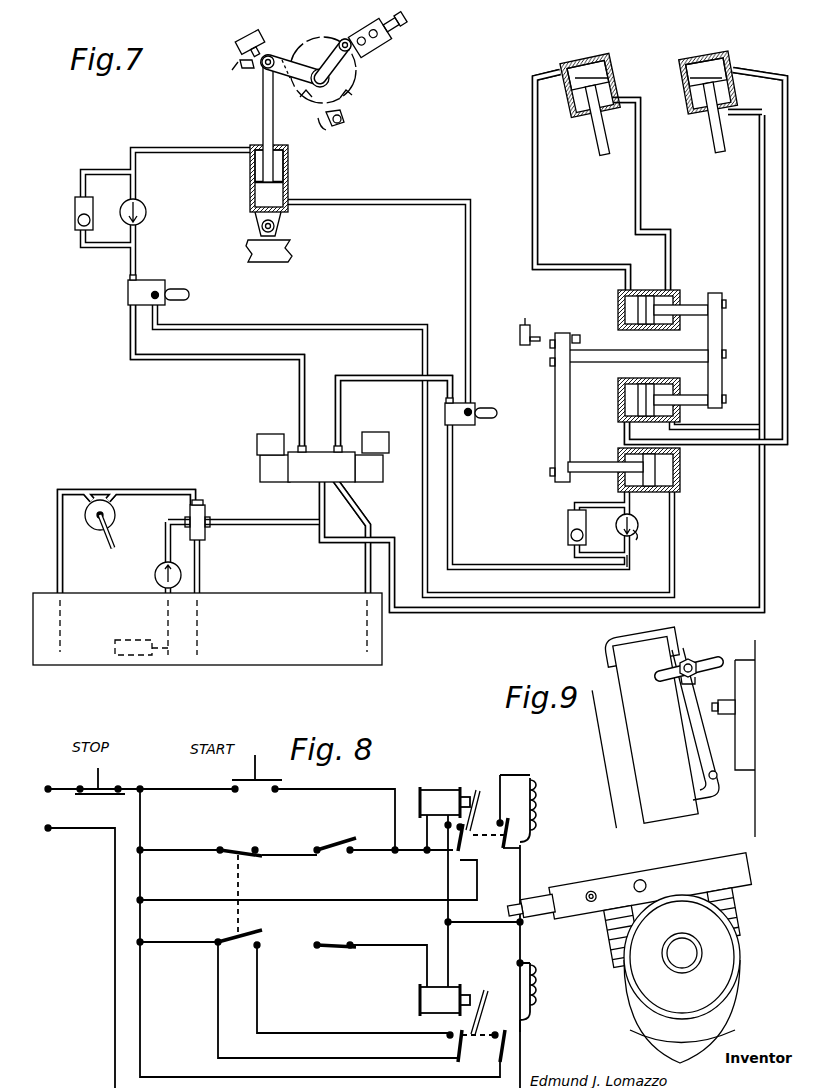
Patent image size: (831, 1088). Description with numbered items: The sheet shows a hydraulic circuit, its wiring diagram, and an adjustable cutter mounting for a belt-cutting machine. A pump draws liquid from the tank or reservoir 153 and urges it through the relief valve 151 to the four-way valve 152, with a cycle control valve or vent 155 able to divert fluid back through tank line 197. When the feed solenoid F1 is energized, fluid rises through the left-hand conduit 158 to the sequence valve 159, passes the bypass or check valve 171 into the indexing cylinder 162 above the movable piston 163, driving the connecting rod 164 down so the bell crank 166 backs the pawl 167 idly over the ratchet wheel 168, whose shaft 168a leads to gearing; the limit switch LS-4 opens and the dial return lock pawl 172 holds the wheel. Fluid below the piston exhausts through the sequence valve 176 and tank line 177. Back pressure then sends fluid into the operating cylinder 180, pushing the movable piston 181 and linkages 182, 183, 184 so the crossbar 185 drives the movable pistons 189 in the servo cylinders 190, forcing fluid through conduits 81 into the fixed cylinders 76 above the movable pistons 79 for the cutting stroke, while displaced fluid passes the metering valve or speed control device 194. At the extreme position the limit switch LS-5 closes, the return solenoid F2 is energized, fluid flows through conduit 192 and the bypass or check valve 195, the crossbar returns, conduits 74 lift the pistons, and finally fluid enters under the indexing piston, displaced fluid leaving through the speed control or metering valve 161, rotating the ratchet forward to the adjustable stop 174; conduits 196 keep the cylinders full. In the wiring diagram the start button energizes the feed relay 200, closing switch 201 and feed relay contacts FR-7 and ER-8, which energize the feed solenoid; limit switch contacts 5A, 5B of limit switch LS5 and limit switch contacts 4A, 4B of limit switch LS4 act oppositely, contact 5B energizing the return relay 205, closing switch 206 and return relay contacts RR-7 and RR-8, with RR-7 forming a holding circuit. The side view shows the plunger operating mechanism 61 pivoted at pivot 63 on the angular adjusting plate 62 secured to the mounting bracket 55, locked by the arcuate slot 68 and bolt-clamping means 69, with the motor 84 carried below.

In FIG. 7, the limit switch LS-4 is at (238, 38).
In FIG. 7, the bell crank 166 is at (303, 58).
In FIG. 7, the shaft 168a is at (322, 70).
In FIG. 7, the adjustable stop 174 is at (386, 28).
In FIG. 7, the pawl 167 is at (352, 60).
In FIG. 7, the ratchet wheel 168 is at (340, 108).
In FIG. 7, the dial return lock pawl 172 is at (333, 128).
In FIG. 7, the connecting rod 164 is at (262, 110).
In FIG. 7, the movable piston 163 is at (252, 170).
In FIG. 7, the indexing cylinder 162 is at (243, 204).
In FIG. 7, the speed control or metering valve 161 is at (146, 210).
In FIG. 7, the bypass or check valve 171 is at (75, 212).
In FIG. 7, the sequence valve 159 is at (158, 282).
In FIG. 7, the left-hand conduit 158 is at (300, 390).
In FIG. 7, the conduit 192 is at (360, 373).
In FIG. 7, the return solenoid F2 is at (257, 447).
In FIG. 8, the return solenoid F2 is at (546, 1000).
In FIG. 7, the feed solenoid F1 is at (388, 433).
In FIG. 8, the feed solenoid F1 is at (548, 822).
In FIG. 7, the sequence valve 176 is at (452, 420).
In FIG. 7, the cycle control valve or vent 155 is at (100, 500).
In FIG. 7, the 4-way valve 152 is at (298, 480).
In FIG. 7, the relief valve 151 is at (203, 538).
In FIG. 7, the tank line 197 is at (60, 550).
In FIG. 7, the tank line 177 is at (365, 572).
In FIG. 7, the tank or reservoir 153 is at (300, 655).
In FIG. 7, the fixed cylinders 76 is at (612, 65).
In FIG. 7, the conduits 81 is at (545, 76).
In FIG. 7, the movable pistons 79 is at (700, 80).
In FIG. 7, the conduits 74 is at (640, 160).
In FIG. 7, the conduits 196 is at (702, 232).
In FIG. 7, the movable pistons 189 is at (644, 284).
In FIG. 7, the crossbar 185 is at (712, 293).
In FIG. 7, the servo cylinders 190 is at (618, 298).
In FIG. 7, the linkage 184 is at (620, 362).
In FIG. 7, the linkage 183 is at (558, 430).
In FIG. 7, the linkage 182 is at (590, 468).
In FIG. 7, the operating cylinder 180 is at (682, 478).
In FIG. 7, the movable piston 181 is at (640, 523).
In FIG. 7, the bypass or check valve 195 is at (568, 520).
In FIG. 7, the metering valve or speed control device 194 is at (633, 537).
In FIG. 7, the limit switch LS-5 is at (525, 318).
In FIG. 8, the limit switch contact 5A is at (240, 840).
In FIG. 8, the limit switch contact 4B is at (333, 844).
In FIG. 8, the limit switch contact 5B is at (232, 935).
In FIG. 8, the limit switch contact 4A is at (336, 961).
In FIG. 8, the limit switch LS5 is at (208, 805).
In FIG. 8, the limit switch LS4 is at (288, 805).
In FIG. 8, the feed relay 200 is at (444, 790).
In FIG. 8, the switch 201 is at (478, 795).
In FIG. 8, the feed relay contact FR-7 is at (468, 838).
In FIG. 8, the feed relay contact ER-8 is at (524, 834).
In FIG. 8, the return relay 205 is at (428, 1000).
In FIG. 8, the switch 206 is at (488, 978).
In FIG. 8, the return relay contact RR-7 is at (458, 1047).
In FIG. 8, the return relay contact RR-8 is at (505, 1040).
In FIG. 9, the plunger operating mechanism 61 is at (594, 749).
In FIG. 9, the angular adjusting plate 62 is at (728, 657).
In FIG. 9, the mounting bracket 55 is at (745, 727).
In FIG. 9, the bolt-clamping means 69 is at (678, 665).
In FIG. 9, the arcuate slot 68 is at (712, 660).
In FIG. 9, the pivot 63 is at (713, 770).
In FIG. 9, the motor 84 is at (748, 974).